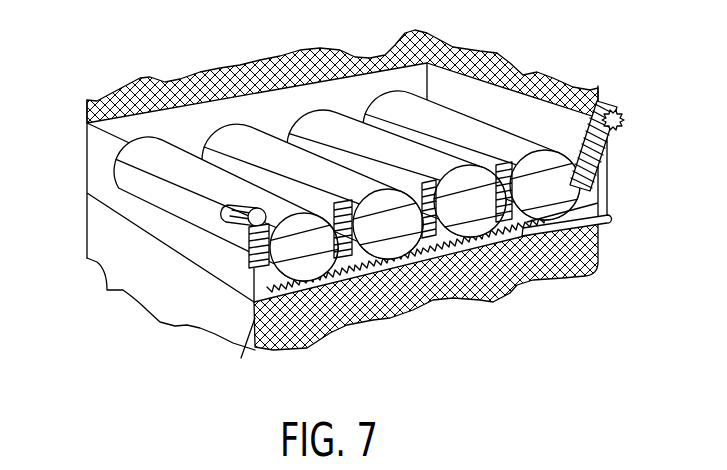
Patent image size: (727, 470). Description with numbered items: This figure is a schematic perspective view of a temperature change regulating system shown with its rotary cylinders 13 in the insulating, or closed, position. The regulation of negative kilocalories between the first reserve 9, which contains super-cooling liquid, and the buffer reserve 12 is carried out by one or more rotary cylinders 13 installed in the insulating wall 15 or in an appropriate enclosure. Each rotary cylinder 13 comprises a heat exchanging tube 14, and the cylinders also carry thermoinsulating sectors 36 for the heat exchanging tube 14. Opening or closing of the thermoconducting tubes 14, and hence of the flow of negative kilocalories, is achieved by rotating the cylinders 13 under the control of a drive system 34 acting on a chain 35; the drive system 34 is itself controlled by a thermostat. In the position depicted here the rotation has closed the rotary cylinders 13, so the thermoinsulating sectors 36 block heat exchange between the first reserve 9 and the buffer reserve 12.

The first reserve 9 is at (87, 116).
The buffer reserve 12 is at (241, 352).
The rotary cylinders 13 is at (318, 120).
The heat exchanging tube 14 is at (552, 188).
The insulating wall 15 is at (487, 107).
The drive system 34 is at (257, 217).
The chain 35 is at (253, 262).
The thermoinsulating sectors 36 is at (448, 255).